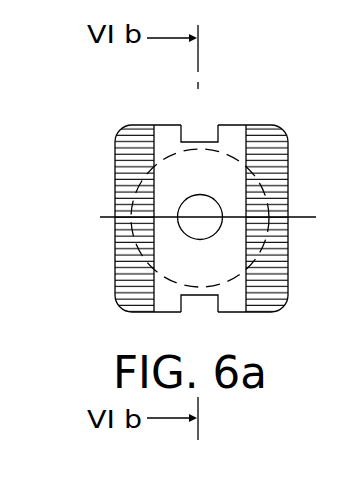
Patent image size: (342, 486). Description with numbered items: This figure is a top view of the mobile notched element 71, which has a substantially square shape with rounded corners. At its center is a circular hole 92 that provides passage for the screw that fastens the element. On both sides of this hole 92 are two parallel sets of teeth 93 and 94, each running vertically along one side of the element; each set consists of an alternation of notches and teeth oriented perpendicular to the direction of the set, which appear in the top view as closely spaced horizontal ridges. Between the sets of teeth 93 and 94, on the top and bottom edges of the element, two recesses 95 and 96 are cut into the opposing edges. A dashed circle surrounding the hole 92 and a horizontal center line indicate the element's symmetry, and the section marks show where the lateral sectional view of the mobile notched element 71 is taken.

The mobile notched element 71 is at (97, 150).
The circular hole 92 is at (190, 206).
The set of teeth 93 is at (283, 283).
The set of teeth 94 is at (120, 283).
The recess 95 is at (202, 142).
The recess 96 is at (203, 295).